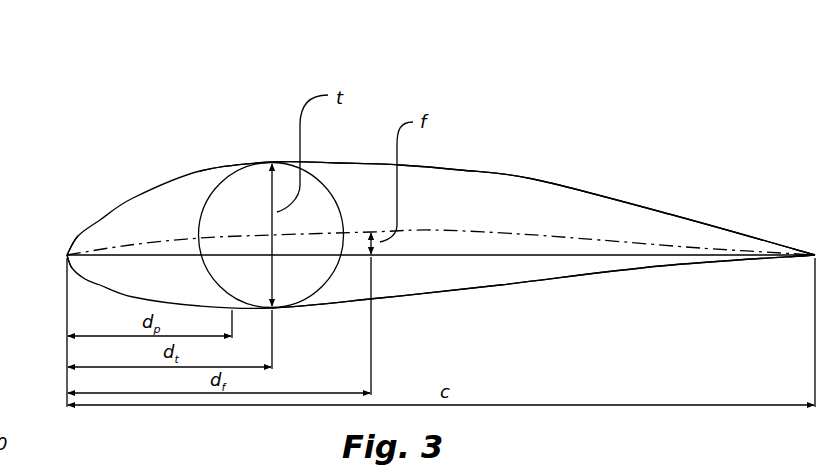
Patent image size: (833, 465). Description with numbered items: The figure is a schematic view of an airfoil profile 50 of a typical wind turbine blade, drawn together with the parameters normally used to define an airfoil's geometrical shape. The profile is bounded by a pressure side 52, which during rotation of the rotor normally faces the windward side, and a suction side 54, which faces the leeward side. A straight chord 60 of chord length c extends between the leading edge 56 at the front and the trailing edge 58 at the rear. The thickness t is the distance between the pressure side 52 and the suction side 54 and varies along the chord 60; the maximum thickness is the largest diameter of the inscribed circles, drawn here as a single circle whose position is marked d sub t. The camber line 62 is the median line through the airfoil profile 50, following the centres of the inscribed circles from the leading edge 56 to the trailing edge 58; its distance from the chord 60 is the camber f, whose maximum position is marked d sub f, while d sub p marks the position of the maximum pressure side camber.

The airfoil profile 50 is at (417, 89).
The pressure side 52 is at (590, 281).
The suction side 54 is at (533, 179).
The leading edge 56 is at (67, 254).
The trailing edge 58 is at (813, 250).
The chord 60 is at (623, 253).
The camber line 62 is at (432, 230).